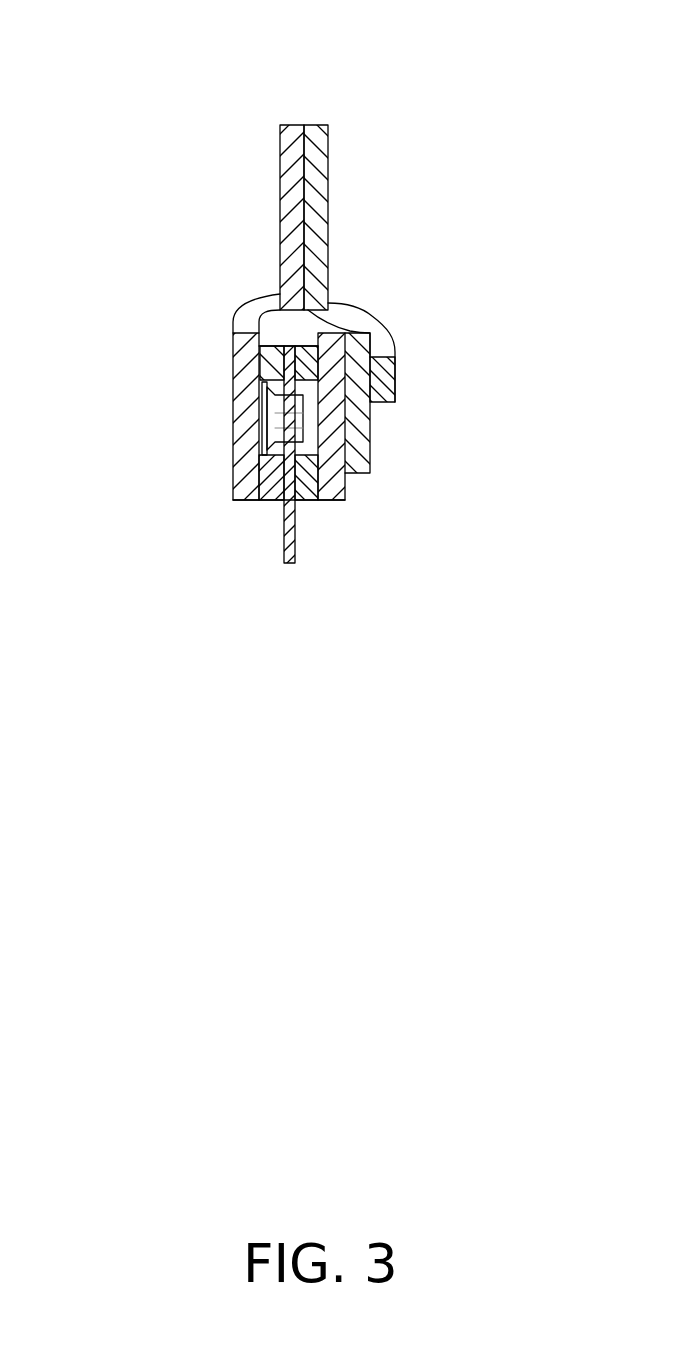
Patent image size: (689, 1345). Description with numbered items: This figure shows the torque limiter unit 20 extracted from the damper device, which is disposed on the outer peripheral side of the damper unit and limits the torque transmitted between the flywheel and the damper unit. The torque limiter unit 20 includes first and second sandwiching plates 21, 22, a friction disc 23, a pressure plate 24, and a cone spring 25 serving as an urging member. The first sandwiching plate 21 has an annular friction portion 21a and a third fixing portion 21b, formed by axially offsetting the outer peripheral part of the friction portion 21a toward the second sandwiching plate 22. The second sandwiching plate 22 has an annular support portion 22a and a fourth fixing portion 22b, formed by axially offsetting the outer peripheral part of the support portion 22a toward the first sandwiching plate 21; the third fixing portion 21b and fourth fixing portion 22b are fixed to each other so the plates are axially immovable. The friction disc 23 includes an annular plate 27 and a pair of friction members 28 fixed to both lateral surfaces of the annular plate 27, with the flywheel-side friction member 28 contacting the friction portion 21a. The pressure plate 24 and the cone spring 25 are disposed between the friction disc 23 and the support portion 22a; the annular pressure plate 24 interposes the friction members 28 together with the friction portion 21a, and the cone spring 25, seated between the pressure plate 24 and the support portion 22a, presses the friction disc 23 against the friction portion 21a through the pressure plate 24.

The torque limiter unit 20 is at (470, 125).
The first sandwiching plate 21 is at (233, 366).
The friction portion 21a is at (247, 418).
The third fixing portion 21b is at (297, 202).
The second sandwiching plate 22 is at (406, 455).
The support portion 22a is at (390, 377).
The fourth fixing portion 22b is at (317, 187).
The friction disc 23 is at (273, 508).
The pressure plate 24 is at (300, 487).
The cone spring 25 is at (372, 428).
The annular plate 27 is at (295, 542).
The friction members 28 is at (297, 483).